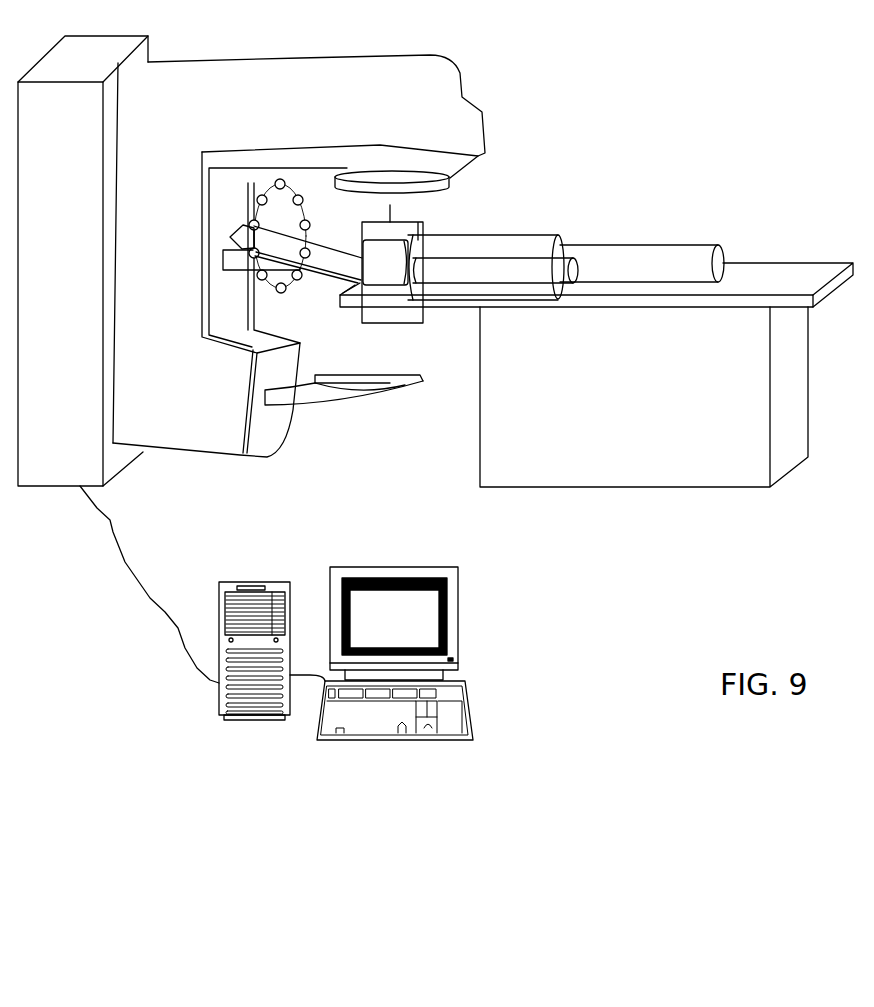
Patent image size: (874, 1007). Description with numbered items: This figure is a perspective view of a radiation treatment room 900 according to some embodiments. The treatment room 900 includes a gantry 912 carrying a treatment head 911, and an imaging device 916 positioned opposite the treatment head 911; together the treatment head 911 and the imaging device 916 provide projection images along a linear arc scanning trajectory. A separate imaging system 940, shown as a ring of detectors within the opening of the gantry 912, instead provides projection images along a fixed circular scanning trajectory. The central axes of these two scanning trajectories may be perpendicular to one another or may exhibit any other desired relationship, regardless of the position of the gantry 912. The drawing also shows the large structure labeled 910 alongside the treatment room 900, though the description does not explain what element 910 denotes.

The treatment room 900 is at (718, 104).
The gantry 910 is at (508, 107).
The treatment head 911 is at (473, 166).
The gantry 912 is at (277, 57).
The imaging device 916 is at (413, 381).
The imaging system 940 is at (237, 210).